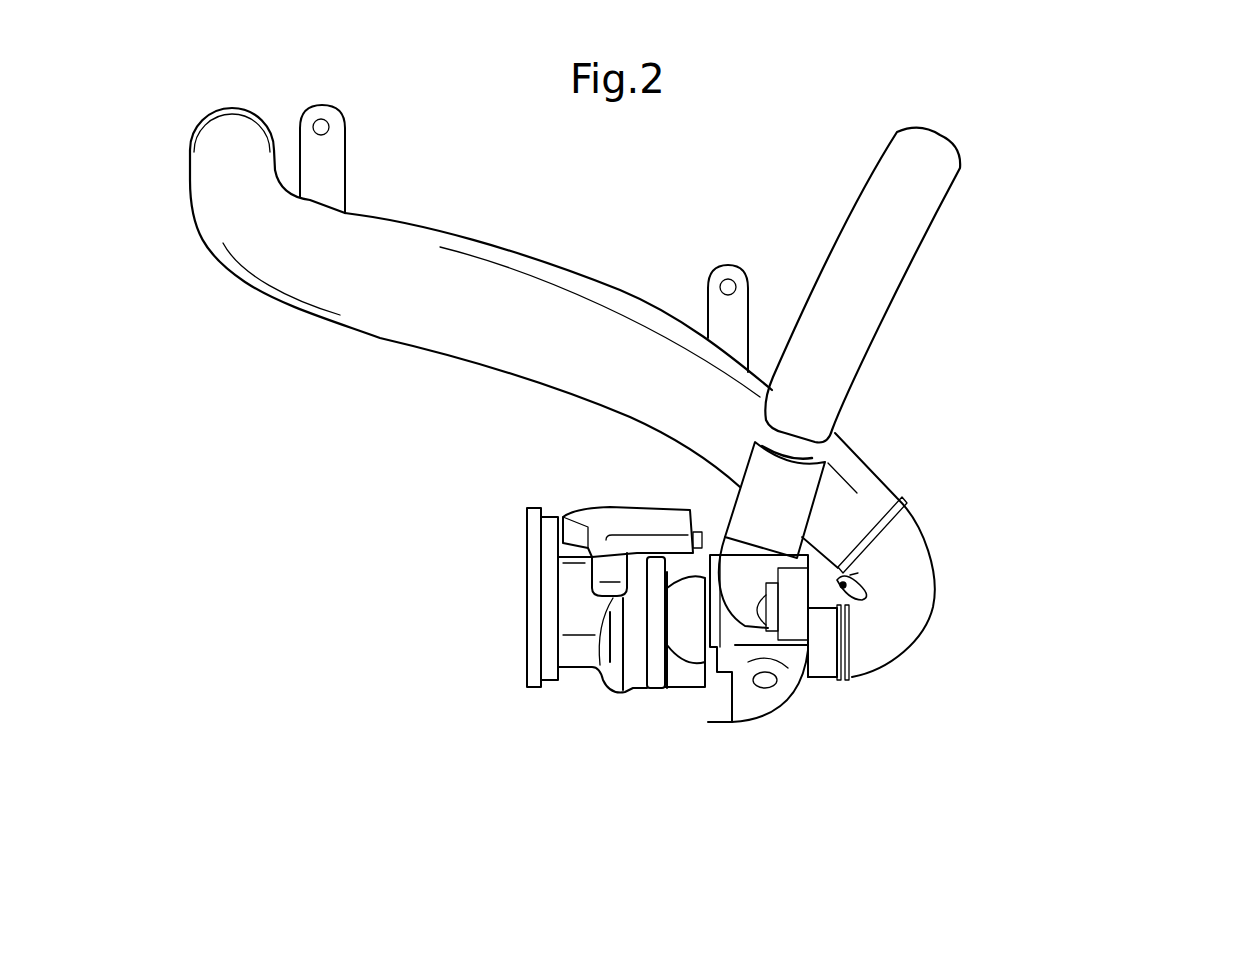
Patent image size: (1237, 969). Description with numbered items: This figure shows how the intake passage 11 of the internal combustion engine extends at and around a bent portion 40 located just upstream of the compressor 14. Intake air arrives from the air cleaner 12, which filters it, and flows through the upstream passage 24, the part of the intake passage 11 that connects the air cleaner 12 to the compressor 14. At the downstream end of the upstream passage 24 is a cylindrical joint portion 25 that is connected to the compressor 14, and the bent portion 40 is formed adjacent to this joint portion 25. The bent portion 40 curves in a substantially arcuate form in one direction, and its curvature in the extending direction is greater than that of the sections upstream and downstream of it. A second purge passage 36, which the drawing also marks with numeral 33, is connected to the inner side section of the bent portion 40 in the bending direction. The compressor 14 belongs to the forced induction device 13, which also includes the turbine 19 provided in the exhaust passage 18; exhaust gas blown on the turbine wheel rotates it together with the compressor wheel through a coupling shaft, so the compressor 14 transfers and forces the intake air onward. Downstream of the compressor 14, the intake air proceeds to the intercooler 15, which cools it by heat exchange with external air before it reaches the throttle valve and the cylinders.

The intake passage 11 is at (847, 214).
The air cleaner 12 is at (241, 82).
The forced induction device 13 is at (667, 673).
The compressor 14 is at (780, 739).
The intercooler 15 is at (965, 228).
The exhaust passage 18 is at (498, 592).
The turbine 19 is at (608, 743).
The upstream passage 24 is at (518, 263).
The joint portion 25 is at (825, 679).
The blow-by gas passage 33 is at (866, 583).
The second purge passage 36 is at (884, 594).
The bent portion 40 is at (928, 632).